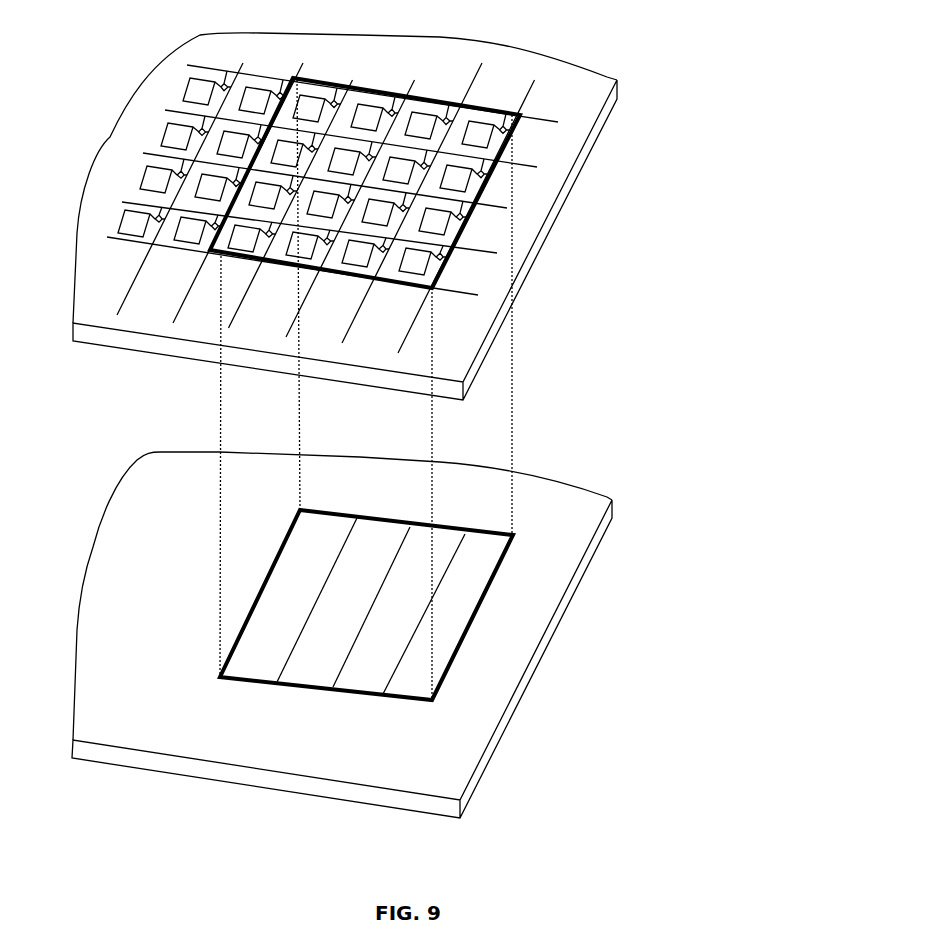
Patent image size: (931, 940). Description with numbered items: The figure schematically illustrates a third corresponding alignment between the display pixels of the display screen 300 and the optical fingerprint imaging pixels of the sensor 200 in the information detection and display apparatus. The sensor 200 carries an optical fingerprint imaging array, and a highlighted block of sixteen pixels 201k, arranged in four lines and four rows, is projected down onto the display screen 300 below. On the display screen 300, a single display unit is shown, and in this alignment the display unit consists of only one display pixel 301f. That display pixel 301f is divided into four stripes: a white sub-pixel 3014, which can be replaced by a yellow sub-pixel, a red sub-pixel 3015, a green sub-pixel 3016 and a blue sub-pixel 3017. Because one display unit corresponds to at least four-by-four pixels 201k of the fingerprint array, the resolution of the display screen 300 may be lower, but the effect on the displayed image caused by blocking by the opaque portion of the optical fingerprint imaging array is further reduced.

The sensor 200 is at (432, 216).
The pixels of the optical fingerprint array 201k is at (437, 270).
The display screen 300 is at (435, 635).
The display pixel 301f is at (440, 653).
The white sub-pixel 3014 is at (253, 661).
The red sub-pixel 3015 is at (313, 665).
The green sub-pixel 3016 is at (360, 680).
The blue sub-pixel 3017 is at (420, 680).